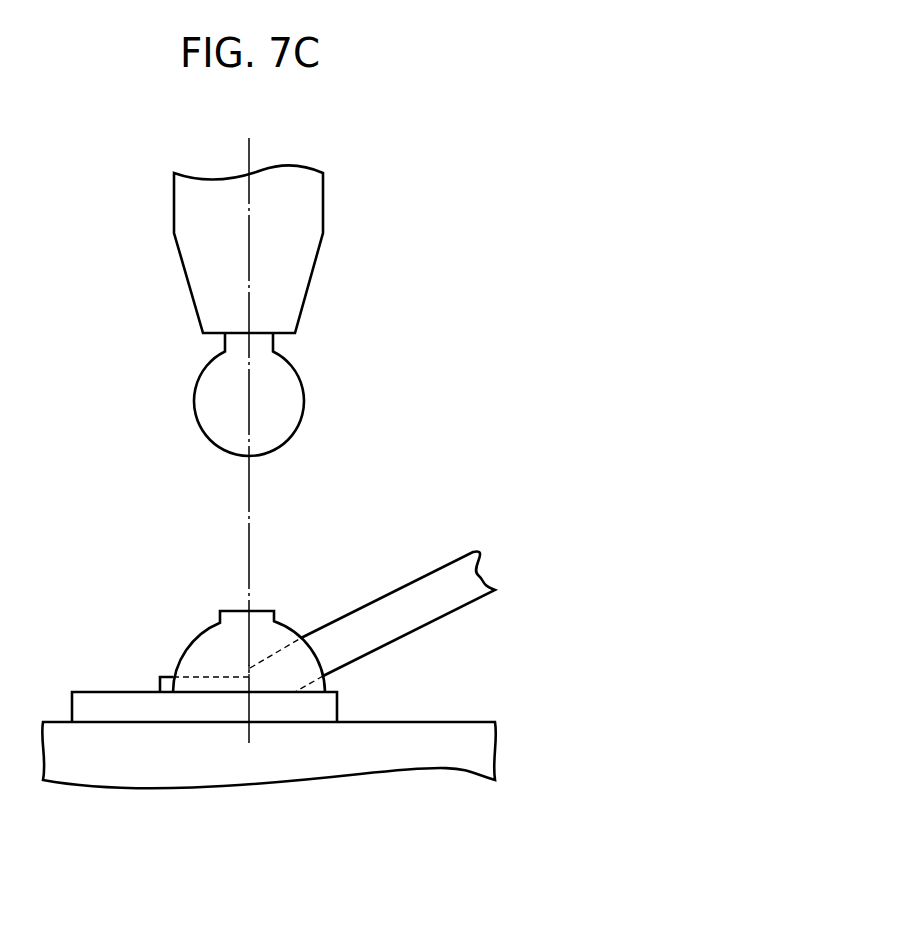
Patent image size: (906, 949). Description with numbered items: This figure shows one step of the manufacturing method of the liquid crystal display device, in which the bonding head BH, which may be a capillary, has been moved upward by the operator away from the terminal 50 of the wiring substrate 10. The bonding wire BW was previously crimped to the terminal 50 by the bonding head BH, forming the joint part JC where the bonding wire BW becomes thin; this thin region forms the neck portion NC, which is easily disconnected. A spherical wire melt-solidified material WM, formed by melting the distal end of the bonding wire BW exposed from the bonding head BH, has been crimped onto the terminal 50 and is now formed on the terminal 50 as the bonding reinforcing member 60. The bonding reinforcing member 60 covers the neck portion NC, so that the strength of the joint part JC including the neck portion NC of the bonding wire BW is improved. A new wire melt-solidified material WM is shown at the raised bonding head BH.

The bonding head BH is at (310, 214).
The wire melt-solidified material WM is at (292, 386).
The bonding reinforcing member 60 is at (291, 628).
The bonding wire BW is at (450, 603).
The neck portion NC is at (247, 670).
The joint part JC is at (197, 677).
The terminal 50 is at (330, 710).
The wiring substrate 10 is at (487, 750).